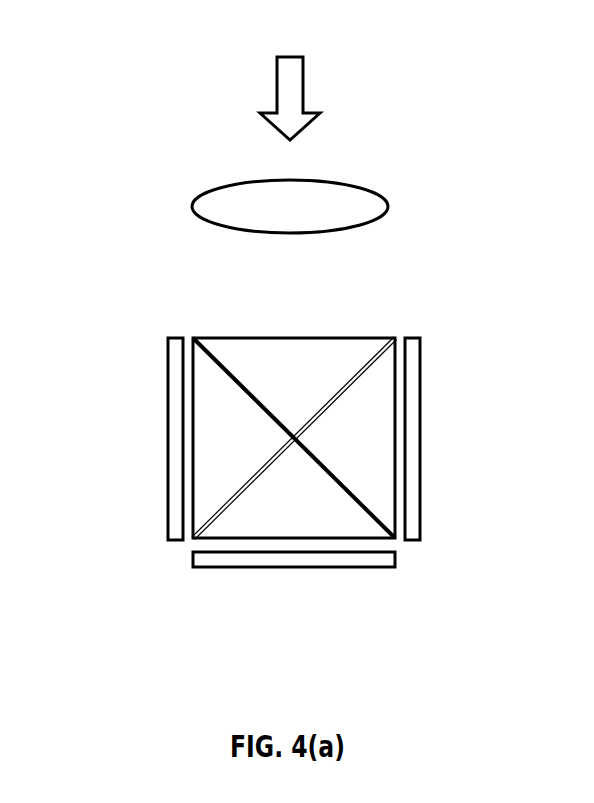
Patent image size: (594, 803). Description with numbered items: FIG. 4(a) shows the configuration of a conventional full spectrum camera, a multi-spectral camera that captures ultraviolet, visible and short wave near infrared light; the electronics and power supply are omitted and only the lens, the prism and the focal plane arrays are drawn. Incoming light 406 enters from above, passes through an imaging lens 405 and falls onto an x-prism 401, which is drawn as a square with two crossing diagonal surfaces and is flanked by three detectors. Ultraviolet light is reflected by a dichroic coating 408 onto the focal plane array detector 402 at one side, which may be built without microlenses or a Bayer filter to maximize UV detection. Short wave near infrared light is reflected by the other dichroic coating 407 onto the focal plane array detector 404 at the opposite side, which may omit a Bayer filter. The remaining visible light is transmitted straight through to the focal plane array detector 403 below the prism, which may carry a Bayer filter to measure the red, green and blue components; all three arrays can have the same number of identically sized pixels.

The x-prism 401 is at (327, 338).
The focal plane array detector 402 is at (168, 462).
The focal plane array detector 403 is at (303, 567).
The focal plane array detector 404 is at (422, 413).
The imaging lens 405 is at (220, 193).
The incoming light 406 is at (277, 90).
The dichroic coating 407 is at (220, 360).
The dichroic coating 408 is at (227, 512).